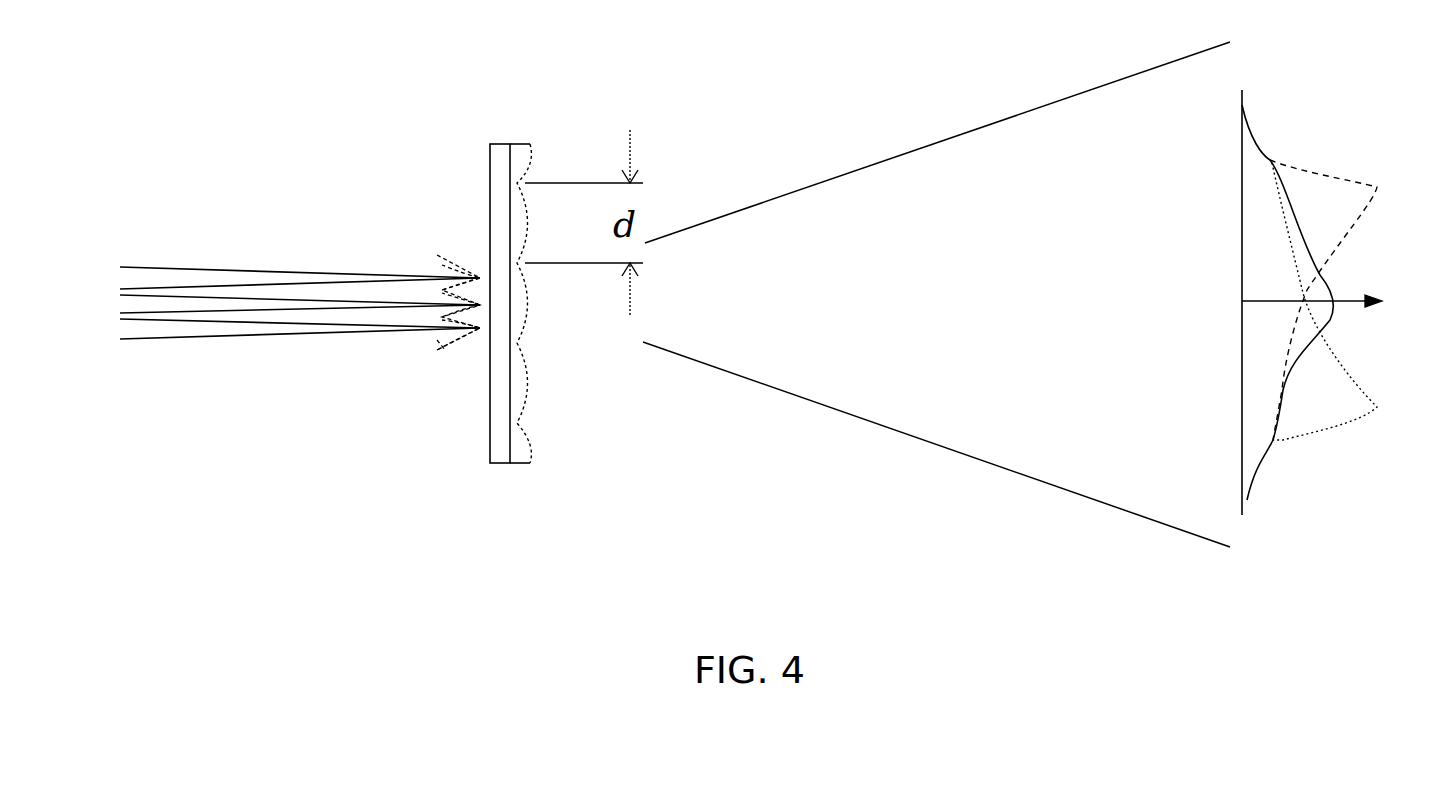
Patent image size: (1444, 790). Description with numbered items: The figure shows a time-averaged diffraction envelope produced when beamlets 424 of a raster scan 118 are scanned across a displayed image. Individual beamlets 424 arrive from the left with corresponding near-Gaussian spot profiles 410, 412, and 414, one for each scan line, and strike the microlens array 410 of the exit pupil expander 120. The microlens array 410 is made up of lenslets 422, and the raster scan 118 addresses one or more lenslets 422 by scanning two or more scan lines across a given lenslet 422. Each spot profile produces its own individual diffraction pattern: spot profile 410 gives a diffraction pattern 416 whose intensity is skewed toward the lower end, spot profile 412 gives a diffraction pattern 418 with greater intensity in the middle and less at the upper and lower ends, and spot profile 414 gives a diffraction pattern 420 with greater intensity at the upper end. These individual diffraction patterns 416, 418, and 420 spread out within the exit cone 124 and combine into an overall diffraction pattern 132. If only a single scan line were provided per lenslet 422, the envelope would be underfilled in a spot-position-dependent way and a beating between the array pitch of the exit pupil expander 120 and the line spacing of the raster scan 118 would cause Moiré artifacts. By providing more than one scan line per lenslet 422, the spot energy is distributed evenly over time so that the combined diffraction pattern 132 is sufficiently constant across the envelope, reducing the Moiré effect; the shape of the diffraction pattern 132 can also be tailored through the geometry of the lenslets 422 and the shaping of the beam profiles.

The raster scan 118 is at (200, 268).
The exit pupil expander 120 is at (533, 268).
The exit cone 124 is at (905, 150).
The diffraction pattern 132 is at (1343, 288).
The microlens array 410 is at (460, 262).
The spot profile 412 is at (480, 308).
The spot profile 414 is at (462, 344).
The diffraction pattern 416 is at (1357, 425).
The diffraction pattern 418 is at (1330, 327).
The diffraction pattern 420 is at (1365, 210).
The lenslet 422 is at (530, 398).
The beamlet 424 is at (415, 256).